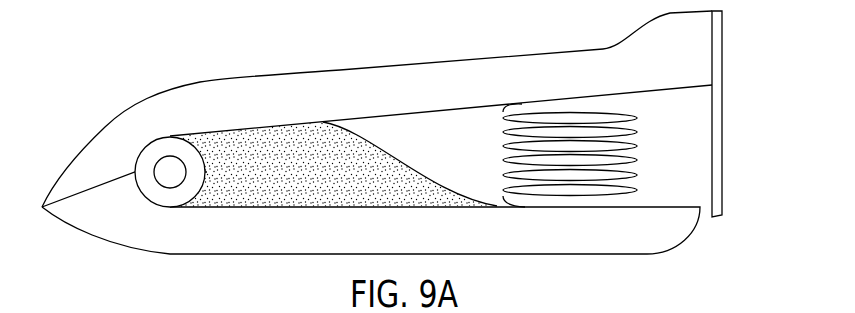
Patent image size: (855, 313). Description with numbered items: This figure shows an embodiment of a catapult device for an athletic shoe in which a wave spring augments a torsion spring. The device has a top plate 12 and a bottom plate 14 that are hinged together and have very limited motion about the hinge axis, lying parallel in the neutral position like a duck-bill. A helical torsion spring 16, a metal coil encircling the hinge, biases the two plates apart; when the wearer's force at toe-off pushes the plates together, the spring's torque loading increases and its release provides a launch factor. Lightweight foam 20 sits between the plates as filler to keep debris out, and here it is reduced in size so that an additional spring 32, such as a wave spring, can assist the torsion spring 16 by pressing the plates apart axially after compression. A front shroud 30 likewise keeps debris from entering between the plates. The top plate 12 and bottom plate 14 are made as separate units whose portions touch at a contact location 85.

The top plate 12 is at (352, 88).
The bottom plate 14 is at (658, 217).
The helical torsion spring 16 is at (162, 150).
The lightweight foam 20 is at (242, 140).
The front shroud 30 is at (717, 145).
The spring 32 is at (610, 112).
The contact location 85 is at (98, 185).